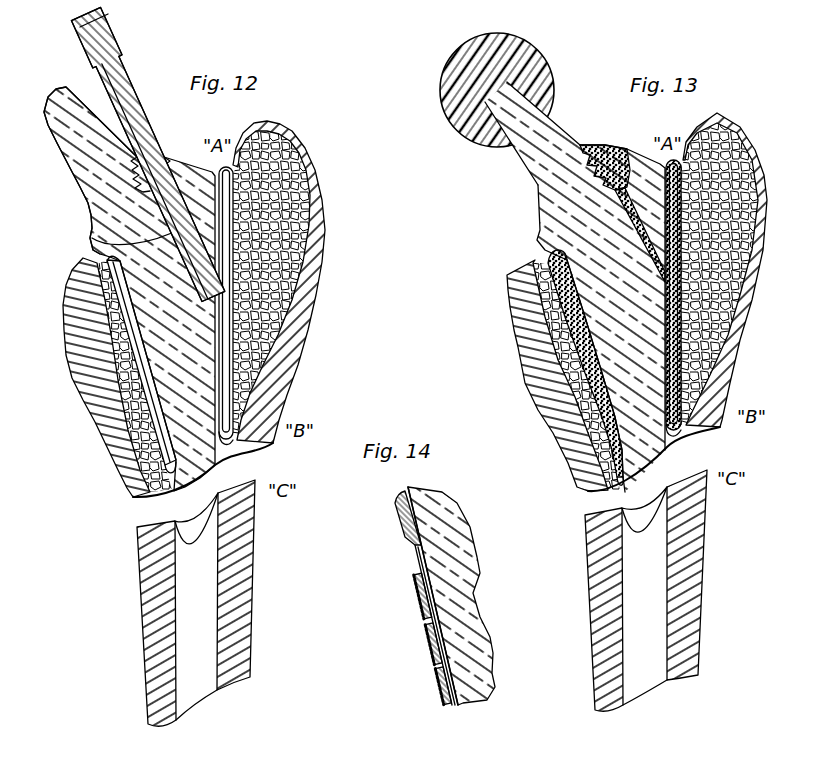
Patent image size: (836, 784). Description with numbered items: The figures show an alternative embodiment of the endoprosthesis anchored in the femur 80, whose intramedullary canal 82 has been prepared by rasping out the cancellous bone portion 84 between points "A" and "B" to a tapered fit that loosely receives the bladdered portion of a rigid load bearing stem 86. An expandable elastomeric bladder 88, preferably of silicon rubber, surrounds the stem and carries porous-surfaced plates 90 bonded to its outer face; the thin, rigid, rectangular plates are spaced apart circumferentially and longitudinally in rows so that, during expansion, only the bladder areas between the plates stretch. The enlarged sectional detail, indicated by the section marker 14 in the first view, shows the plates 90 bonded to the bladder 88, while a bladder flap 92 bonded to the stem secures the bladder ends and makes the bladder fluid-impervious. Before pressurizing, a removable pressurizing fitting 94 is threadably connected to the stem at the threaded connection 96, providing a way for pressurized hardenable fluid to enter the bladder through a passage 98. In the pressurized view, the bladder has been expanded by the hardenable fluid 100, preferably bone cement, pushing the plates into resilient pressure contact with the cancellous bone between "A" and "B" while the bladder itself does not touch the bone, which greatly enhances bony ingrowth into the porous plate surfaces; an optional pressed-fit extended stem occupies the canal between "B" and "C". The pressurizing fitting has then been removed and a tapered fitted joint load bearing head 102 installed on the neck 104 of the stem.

In FIG. 12, the femur 80 is at (333, 285).
In FIG. 12, the intramedullary canal 82 is at (198, 587).
In FIG. 13, the intramedullary canal 82 is at (647, 567).
In FIG. 12, the cancellous bone portion 84 is at (300, 223).
In FIG. 12, the rigid load bearing stem 86 is at (190, 347).
In FIG. 13, the rigid load bearing stem 86 is at (650, 310).
In FIG. 14, the rigid load bearing stem 86 is at (462, 570).
In FIG. 12, the expandable elastomeric bladder 88 is at (240, 258).
In FIG. 13, the expandable elastomeric bladder 88 is at (687, 203).
In FIG. 14, the expandable elastomeric bladder 88 is at (413, 547).
In FIG. 14, the porous-surfaced plates 90 is at (435, 677).
In FIG. 14, the bladder flap 92 is at (412, 513).
In FIG. 12, the removable pressurizing fitting 94 is at (127, 70).
In FIG. 12, the threaded connection 96 is at (180, 163).
In FIG. 12, the passage 98 is at (110, 220).
In FIG. 13, the hardenable fluid 100 is at (672, 238).
In FIG. 13, the tapered fitted joint load bearing head 102 is at (520, 50).
In FIG. 13, the neck 104 is at (533, 133).
In FIG. 12, the section view indicator for FIG. 14 is at (117, 240).